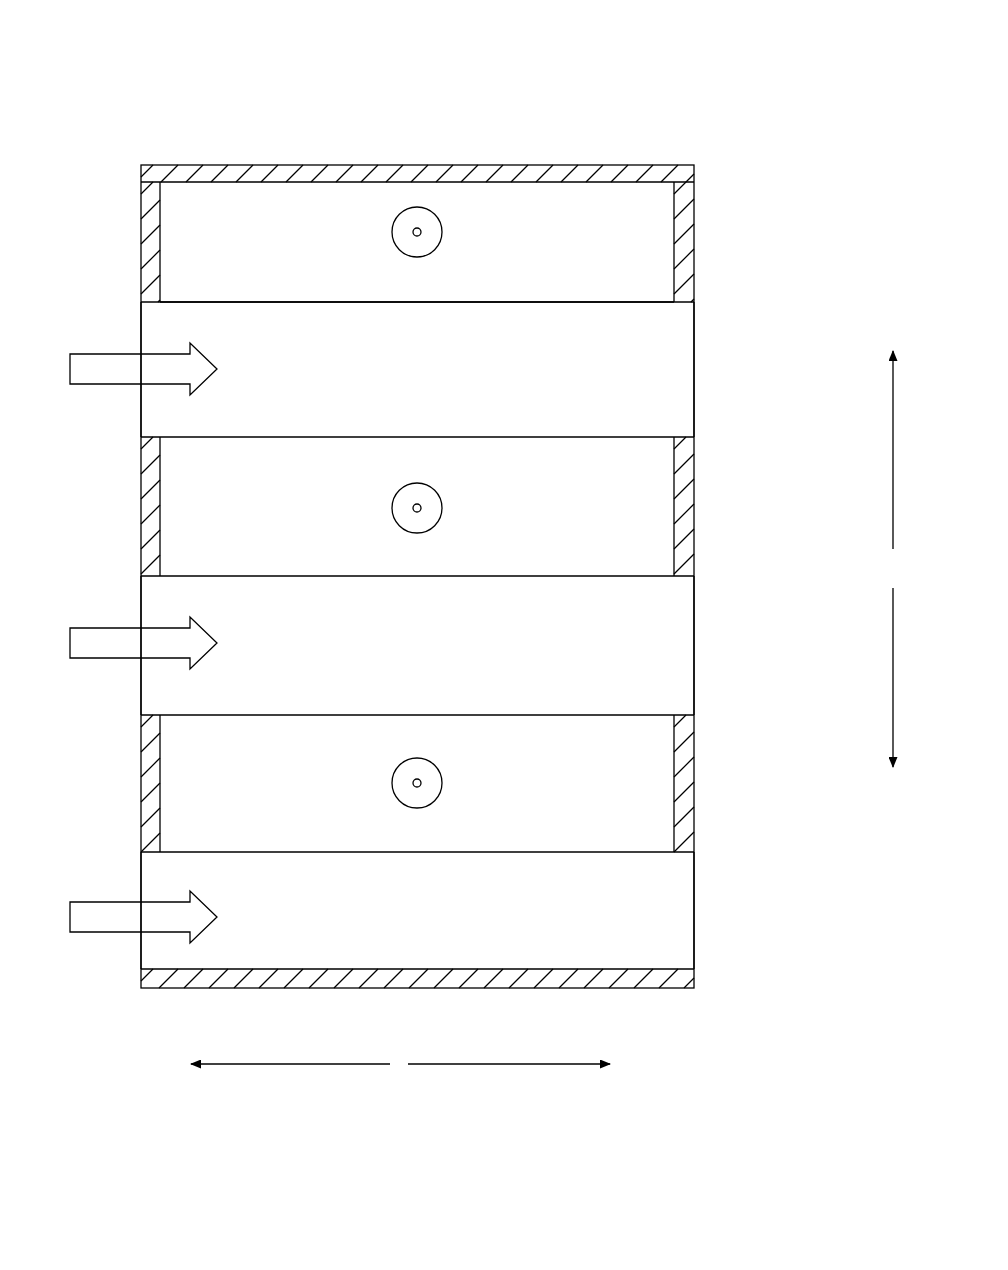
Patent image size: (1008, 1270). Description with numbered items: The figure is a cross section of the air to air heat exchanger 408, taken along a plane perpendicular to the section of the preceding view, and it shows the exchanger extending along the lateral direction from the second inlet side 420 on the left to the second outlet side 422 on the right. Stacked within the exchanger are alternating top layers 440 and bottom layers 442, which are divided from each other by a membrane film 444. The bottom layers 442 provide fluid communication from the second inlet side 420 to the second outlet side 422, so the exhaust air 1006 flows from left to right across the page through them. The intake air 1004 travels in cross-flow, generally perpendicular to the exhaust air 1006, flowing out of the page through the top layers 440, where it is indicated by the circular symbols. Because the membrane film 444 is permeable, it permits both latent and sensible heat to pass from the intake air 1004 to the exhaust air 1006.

The air to air heat exchanger 408 is at (122, 88).
The second inlet side 420 is at (137, 808).
The second outlet side 422 is at (696, 840).
The top layers 440 is at (479, 493).
The bottom layers 442 is at (729, 366).
The membrane film 444 is at (490, 303).
The intake air 1004 is at (392, 232).
The exhaust air 1006 is at (78, 362).